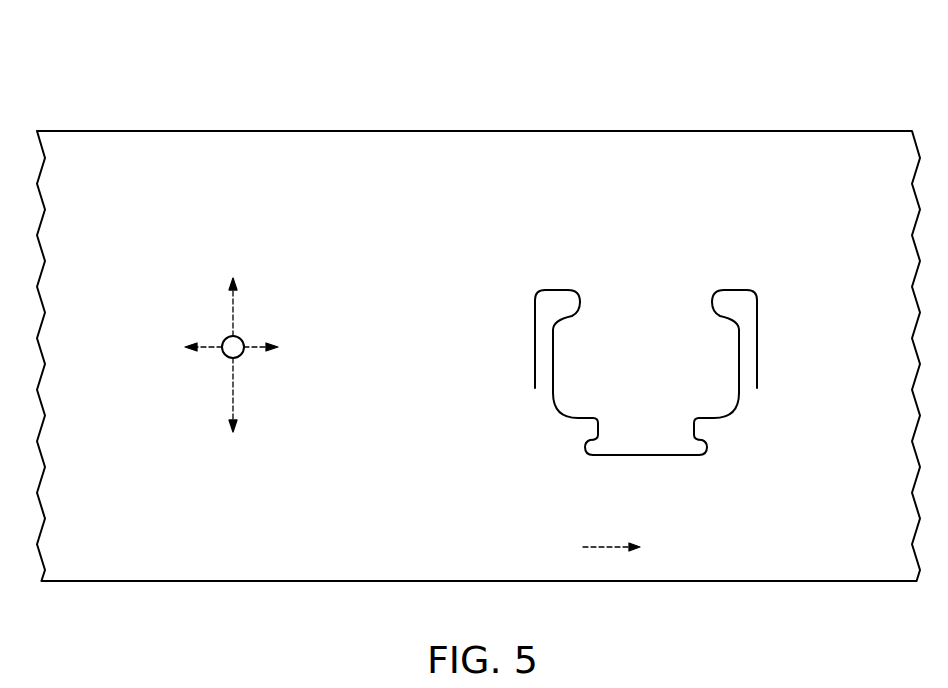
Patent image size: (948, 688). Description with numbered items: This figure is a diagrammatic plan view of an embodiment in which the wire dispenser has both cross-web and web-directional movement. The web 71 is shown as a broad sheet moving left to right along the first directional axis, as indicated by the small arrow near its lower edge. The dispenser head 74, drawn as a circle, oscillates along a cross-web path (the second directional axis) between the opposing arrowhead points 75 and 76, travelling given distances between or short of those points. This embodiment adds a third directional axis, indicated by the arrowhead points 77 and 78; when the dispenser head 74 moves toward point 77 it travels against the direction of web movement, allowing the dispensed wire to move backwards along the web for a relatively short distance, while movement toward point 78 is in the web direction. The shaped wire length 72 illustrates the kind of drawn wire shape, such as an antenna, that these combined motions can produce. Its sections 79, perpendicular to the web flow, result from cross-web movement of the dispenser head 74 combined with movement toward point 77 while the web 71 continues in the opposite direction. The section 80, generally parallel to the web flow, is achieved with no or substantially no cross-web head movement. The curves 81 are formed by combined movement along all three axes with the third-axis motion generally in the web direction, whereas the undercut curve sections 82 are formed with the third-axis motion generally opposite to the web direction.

The web 71 is at (383, 128).
The shaped wire length 72 is at (670, 362).
The dispenser head 74 is at (247, 355).
The arrowhead point 75 is at (232, 278).
The arrowhead point 76 is at (233, 432).
The arrowhead point 77 is at (185, 347).
The arrowhead point 78 is at (296, 335).
The sections 79 is at (535, 345).
The section 80 is at (645, 457).
The curves 81 is at (557, 290).
The undercut curve sections 82 is at (580, 312).